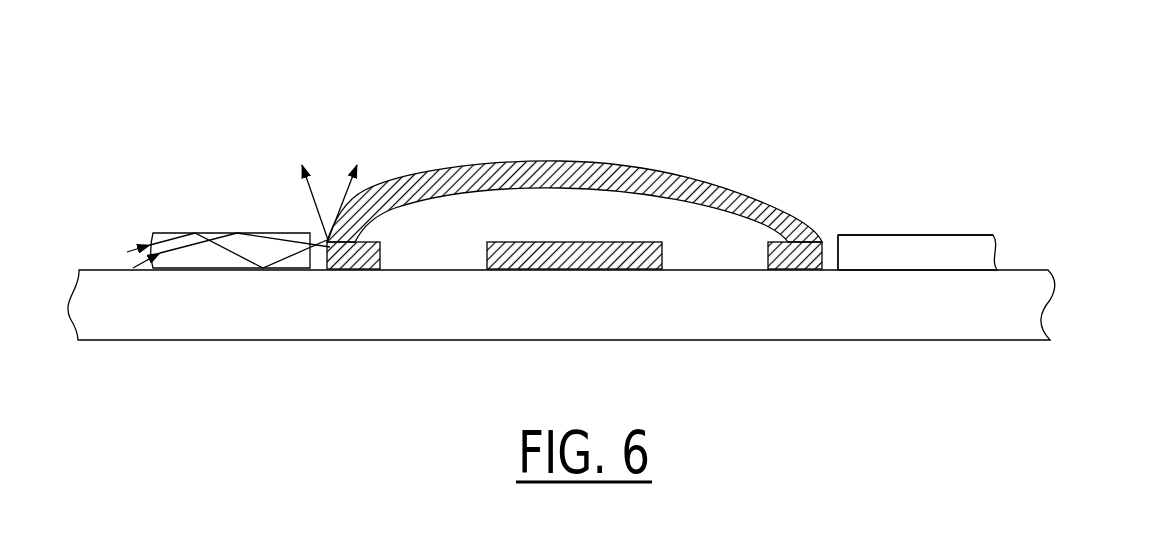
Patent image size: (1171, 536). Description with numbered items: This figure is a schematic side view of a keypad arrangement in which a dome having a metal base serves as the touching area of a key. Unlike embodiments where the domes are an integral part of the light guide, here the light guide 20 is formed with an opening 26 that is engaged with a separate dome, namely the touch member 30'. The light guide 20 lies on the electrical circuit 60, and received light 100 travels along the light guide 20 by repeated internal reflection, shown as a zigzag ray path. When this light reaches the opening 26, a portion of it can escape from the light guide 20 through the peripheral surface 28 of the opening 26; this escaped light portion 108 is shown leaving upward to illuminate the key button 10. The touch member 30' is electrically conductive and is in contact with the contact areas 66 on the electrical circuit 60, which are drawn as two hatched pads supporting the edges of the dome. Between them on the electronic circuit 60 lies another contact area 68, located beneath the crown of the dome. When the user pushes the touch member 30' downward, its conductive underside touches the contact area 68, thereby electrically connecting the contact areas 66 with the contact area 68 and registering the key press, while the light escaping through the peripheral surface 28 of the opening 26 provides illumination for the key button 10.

The key button 10 is at (555, 118).
The light guide 20 is at (962, 253).
The opening 26 is at (830, 245).
The peripheral surface 28 is at (838, 252).
The touch member 30' is at (574, 174).
The electrical circuit 60 is at (1025, 307).
The contact areas 66 is at (381, 255).
The contact area 68 is at (505, 248).
The received light 100 is at (107, 242).
The escaped light portion 108 is at (334, 178).